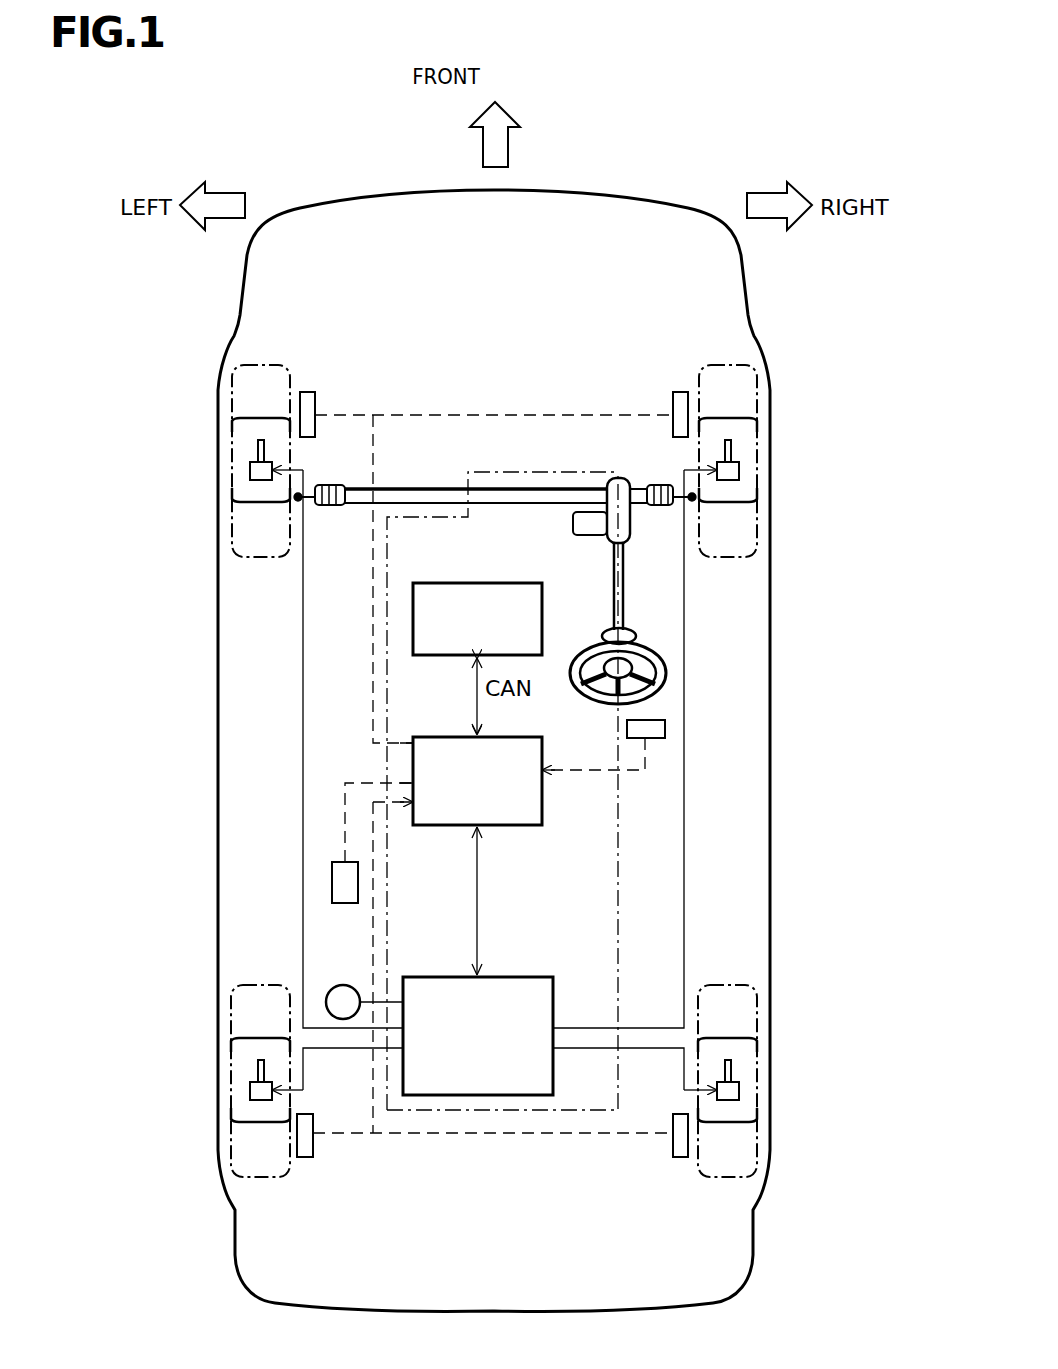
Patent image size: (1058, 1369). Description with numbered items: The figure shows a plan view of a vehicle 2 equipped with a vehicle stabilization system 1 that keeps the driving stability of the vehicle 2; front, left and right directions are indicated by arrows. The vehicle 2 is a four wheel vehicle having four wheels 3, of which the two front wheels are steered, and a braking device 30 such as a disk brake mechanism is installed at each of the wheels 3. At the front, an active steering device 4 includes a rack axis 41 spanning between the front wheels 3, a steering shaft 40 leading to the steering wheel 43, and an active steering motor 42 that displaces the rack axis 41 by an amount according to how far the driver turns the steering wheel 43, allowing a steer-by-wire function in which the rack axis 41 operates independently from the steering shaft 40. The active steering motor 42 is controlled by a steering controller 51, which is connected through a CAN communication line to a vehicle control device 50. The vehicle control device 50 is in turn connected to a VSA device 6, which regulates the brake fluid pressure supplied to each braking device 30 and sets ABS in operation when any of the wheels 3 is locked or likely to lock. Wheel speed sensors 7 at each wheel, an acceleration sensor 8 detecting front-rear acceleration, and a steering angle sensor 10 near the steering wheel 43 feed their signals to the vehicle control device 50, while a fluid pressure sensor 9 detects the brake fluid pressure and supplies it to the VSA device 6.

The vehicle stabilization system 1 is at (540, 470).
The vehicle 2 is at (578, 183).
The wheels 3 is at (238, 442).
The active steering device 4 is at (637, 470).
The VSA device 6 is at (512, 976).
The wheel speed sensors 7 is at (307, 392).
The acceleration sensor 8 is at (342, 862).
The fluid pressure sensor 9 is at (340, 985).
The steering angle sensor 10 is at (656, 758).
The braking device 30 is at (250, 470).
The steering shaft 40 is at (625, 598).
The rack axis 41 is at (440, 488).
The active steering motor 42 is at (593, 535).
The steering wheel 43 is at (664, 690).
The vehicle control device 50 is at (500, 736).
The steering controller 51 is at (500, 582).